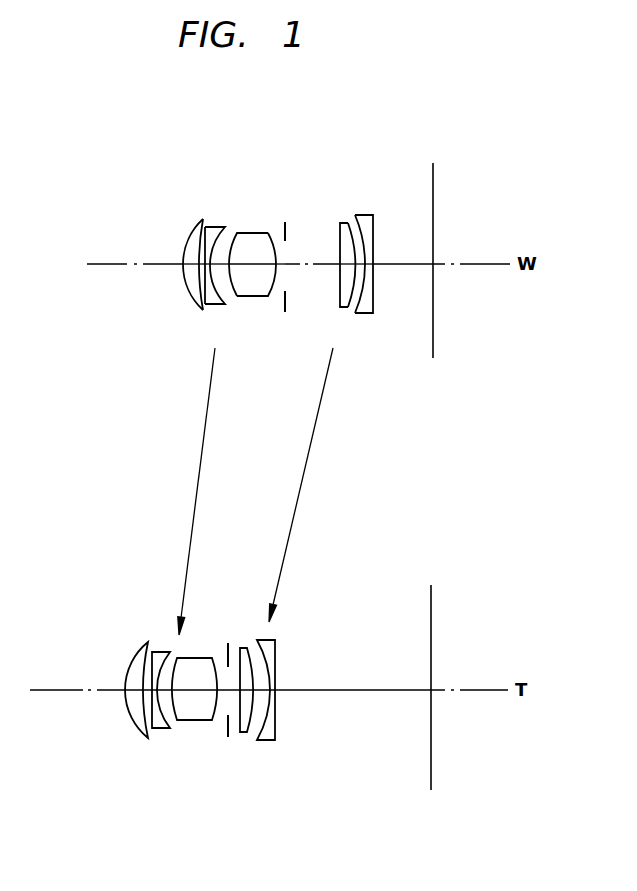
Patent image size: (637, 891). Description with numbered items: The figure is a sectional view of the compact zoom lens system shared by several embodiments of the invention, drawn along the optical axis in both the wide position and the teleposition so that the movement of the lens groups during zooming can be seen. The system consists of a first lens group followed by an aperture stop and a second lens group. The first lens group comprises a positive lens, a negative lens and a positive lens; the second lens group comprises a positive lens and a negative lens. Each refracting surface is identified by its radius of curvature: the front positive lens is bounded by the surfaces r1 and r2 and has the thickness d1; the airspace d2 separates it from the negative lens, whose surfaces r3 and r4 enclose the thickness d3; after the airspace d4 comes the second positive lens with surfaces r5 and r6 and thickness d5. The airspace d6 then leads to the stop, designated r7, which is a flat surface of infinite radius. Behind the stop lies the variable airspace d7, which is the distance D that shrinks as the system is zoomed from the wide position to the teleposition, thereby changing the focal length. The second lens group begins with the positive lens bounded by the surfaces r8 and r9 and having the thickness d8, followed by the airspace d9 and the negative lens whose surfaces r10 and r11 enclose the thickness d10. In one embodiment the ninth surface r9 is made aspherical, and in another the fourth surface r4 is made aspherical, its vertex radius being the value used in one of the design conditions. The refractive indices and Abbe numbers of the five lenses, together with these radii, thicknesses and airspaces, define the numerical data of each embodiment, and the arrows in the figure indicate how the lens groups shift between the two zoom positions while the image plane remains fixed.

The first lens surface radius of curvature r1 is at (188, 230).
The second lens surface radius of curvature r2 is at (200, 228).
The third lens surface radius of curvature r3 is at (206, 232).
The fourth lens surface radius of curvature r4 is at (227, 230).
The fifth lens surface radius of curvature r5 is at (237, 236).
The sixth lens surface radius of curvature r6 is at (272, 236).
The stop surface r7 is at (286, 226).
The eighth lens surface radius of curvature r8 is at (340, 230).
The ninth lens surface radius of curvature r9 is at (351, 238).
The tenth lens surface radius of curvature r10 is at (362, 218).
The eleventh lens surface radius of curvature r11 is at (373, 219).
The first lens thickness d1 is at (192, 273).
The first airspace d2 is at (200, 281).
The second lens thickness d3 is at (209, 284).
The second airspace d4 is at (228, 284).
The third lens thickness d5 is at (252, 267).
The third airspace d6 is at (278, 282).
The variable airspace d7 is at (315, 268).
The fourth lens thickness d8 is at (345, 278).
The fourth airspace d9 is at (362, 283).
The fifth lens thickness d10 is at (373, 273).